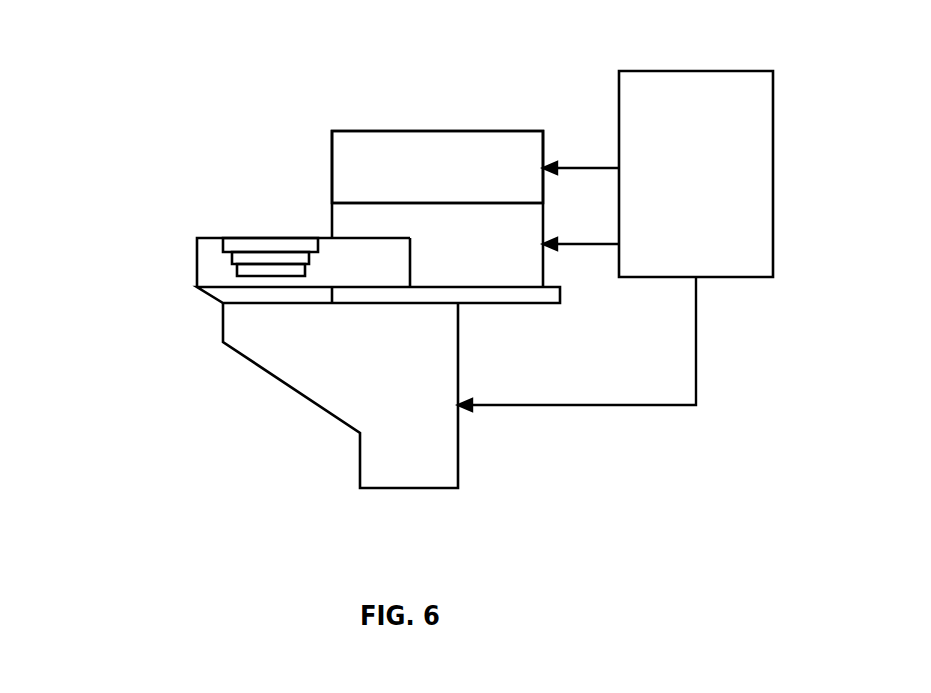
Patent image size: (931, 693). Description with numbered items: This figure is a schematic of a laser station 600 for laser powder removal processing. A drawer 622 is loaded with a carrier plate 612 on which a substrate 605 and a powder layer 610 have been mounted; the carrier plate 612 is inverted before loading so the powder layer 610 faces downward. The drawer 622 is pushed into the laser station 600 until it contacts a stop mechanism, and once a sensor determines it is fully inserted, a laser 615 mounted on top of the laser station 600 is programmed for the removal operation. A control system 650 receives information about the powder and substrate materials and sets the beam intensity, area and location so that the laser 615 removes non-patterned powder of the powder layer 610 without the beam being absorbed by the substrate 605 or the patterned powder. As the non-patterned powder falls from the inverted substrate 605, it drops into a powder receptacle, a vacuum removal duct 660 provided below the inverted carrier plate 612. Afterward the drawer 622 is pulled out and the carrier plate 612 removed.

The laser station 600 is at (476, 219).
The substrate 605 is at (233, 262).
The powder layer 610 is at (237, 277).
The carrier plate 612 is at (270, 245).
The laser 615 is at (431, 147).
The drawer 622 is at (197, 243).
The control system 650 is at (644, 86).
The vacuum removal duct 660 is at (390, 447).